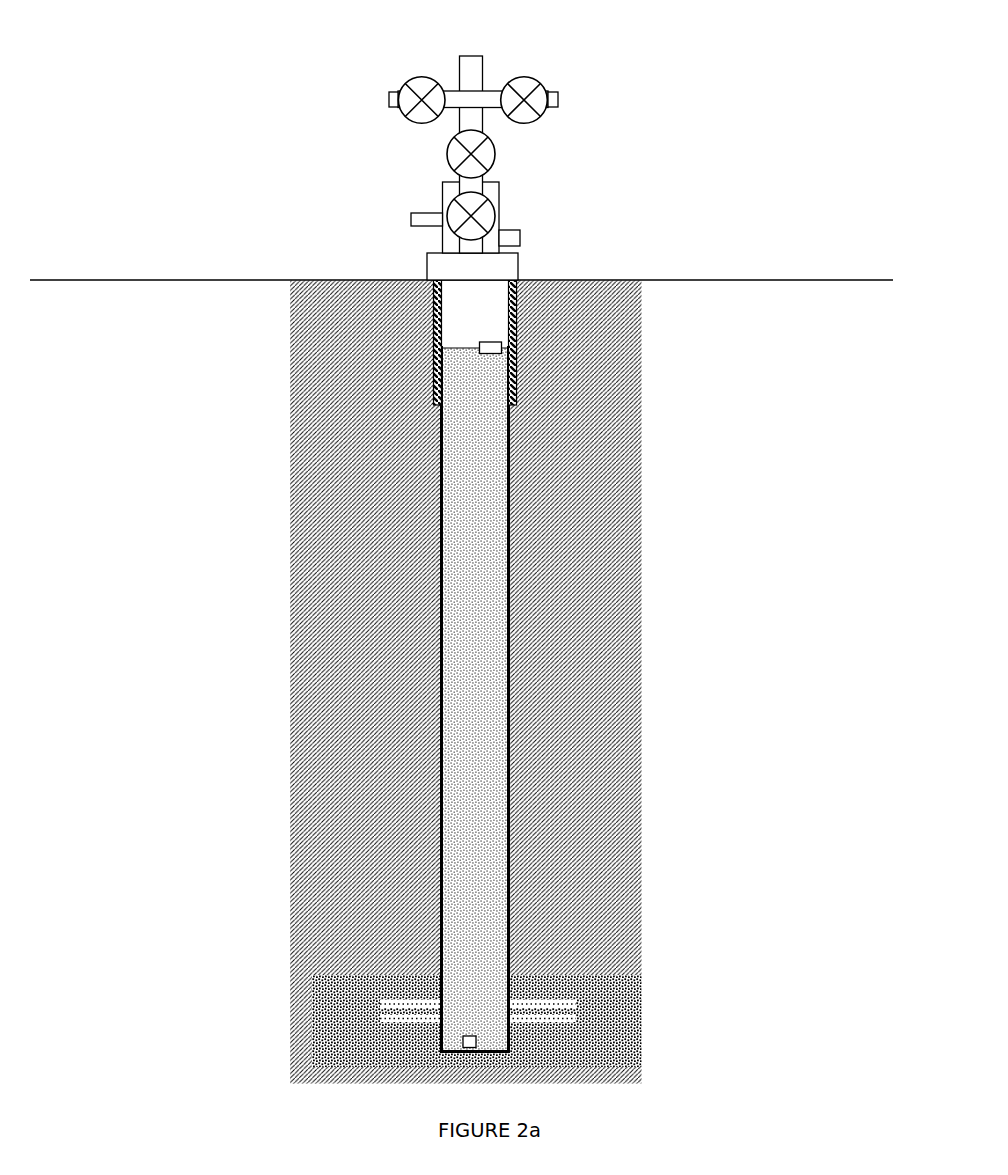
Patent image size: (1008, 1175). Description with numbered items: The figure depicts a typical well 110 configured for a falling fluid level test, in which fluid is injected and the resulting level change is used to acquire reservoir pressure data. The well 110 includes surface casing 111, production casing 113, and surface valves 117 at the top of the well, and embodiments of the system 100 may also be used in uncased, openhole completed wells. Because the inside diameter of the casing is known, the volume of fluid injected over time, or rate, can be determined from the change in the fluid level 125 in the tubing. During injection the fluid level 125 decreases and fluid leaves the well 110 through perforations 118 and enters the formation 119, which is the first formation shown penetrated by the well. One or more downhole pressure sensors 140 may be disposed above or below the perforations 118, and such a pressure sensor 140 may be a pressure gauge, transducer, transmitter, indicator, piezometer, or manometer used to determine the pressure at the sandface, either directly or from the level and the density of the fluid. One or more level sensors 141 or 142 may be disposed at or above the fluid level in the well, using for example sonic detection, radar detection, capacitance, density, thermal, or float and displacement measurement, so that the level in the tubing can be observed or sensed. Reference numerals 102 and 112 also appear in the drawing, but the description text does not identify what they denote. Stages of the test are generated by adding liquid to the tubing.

The system 100 is at (440, 705).
The top of reservoir zone 102 is at (440, 973).
The well 110 is at (400, 713).
The surface casing 111 is at (515, 399).
The production tubing 112 is at (508, 446).
The production casing 113 is at (508, 708).
The surface valves 117 is at (447, 149).
The perforations 118 is at (413, 1018).
The formation 119 is at (330, 997).
The fluid level 125 is at (467, 348).
The downhole pressure sensor 140 is at (462, 1043).
The level sensor 141 is at (520, 234).
The level sensor 142 is at (502, 348).